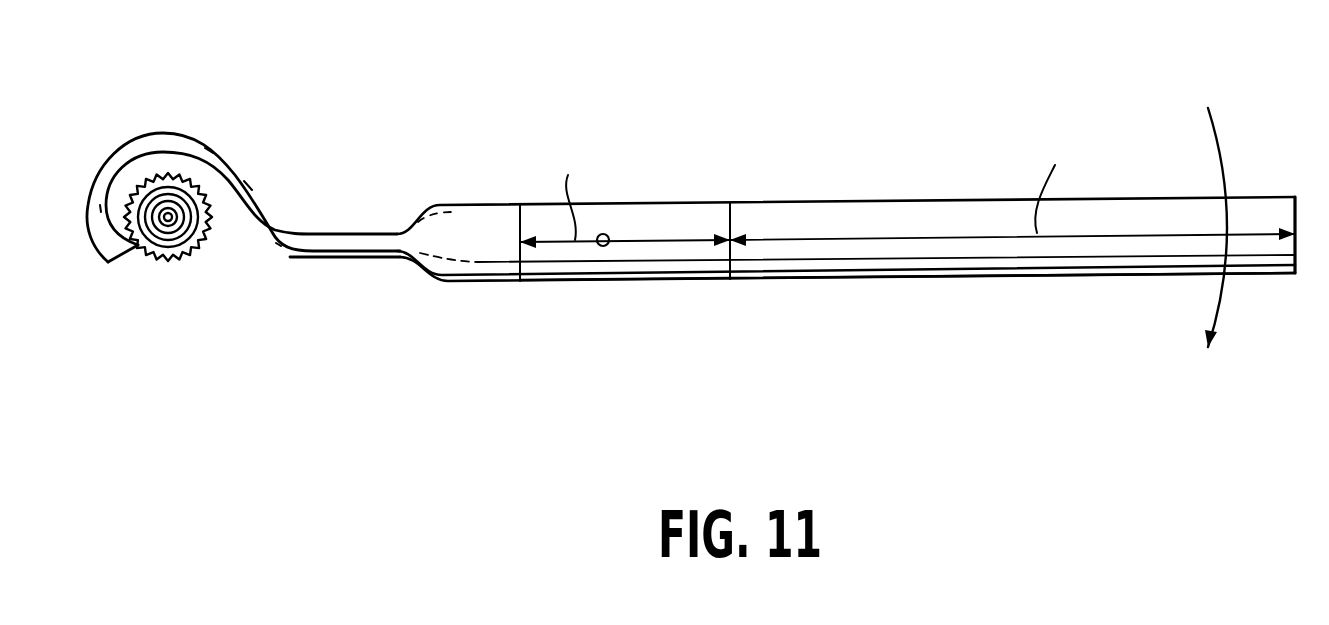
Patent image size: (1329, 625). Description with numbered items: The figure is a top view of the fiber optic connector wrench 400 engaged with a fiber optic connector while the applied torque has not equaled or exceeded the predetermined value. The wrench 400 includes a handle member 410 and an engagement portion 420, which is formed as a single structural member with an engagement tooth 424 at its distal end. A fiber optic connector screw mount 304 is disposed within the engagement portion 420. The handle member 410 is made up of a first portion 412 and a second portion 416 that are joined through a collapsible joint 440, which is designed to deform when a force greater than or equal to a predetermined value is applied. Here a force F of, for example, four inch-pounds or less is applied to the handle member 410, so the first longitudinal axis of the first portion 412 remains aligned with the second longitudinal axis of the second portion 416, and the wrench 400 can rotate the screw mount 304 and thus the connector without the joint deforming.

The fiber optic connector wrench 400 is at (691, 220).
The handle member 410 is at (890, 173).
The first portion 412 is at (625, 283).
The second portion 416 is at (1043, 280).
The engagement portion 420 is at (173, 131).
The engagement tooth 424 is at (130, 252).
The collapsible joint 440 is at (727, 285).
The fiber optic connector screw mount 304 is at (203, 245).